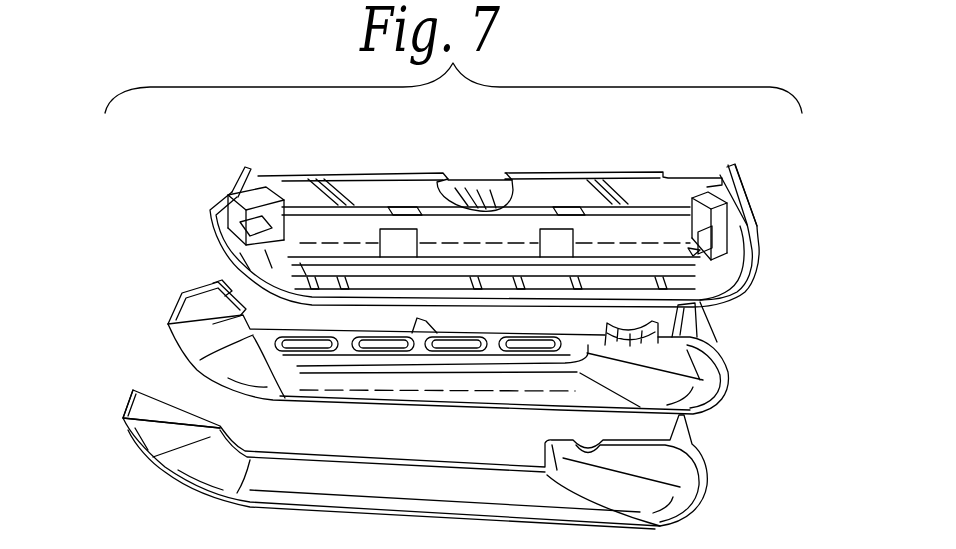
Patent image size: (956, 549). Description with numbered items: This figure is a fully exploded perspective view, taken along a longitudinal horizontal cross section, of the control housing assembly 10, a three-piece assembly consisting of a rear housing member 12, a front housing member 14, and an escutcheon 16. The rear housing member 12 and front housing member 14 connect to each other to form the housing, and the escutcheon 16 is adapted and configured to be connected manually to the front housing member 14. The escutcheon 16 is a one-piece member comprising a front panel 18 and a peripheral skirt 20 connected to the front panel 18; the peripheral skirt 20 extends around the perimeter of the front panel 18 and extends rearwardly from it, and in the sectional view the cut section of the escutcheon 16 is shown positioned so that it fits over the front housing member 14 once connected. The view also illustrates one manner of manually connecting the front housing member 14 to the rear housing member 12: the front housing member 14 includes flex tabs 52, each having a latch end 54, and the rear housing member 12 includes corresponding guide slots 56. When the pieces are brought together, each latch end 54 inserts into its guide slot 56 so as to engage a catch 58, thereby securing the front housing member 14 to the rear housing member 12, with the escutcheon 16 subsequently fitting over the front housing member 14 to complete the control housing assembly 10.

The control housing assembly 10 is at (108, 172).
The rear housing member 12 is at (526, 201).
The front housing member 14 is at (479, 297).
The escutcheon 16 is at (473, 422).
The front panel 18 is at (431, 498).
The peripheral skirt 20 is at (133, 406).
The flex tab 52 is at (206, 287).
The latch end 54 is at (213, 285).
The guide slot 56 is at (228, 192).
The catch 58 is at (692, 254).